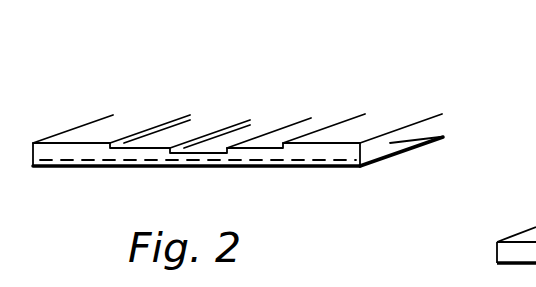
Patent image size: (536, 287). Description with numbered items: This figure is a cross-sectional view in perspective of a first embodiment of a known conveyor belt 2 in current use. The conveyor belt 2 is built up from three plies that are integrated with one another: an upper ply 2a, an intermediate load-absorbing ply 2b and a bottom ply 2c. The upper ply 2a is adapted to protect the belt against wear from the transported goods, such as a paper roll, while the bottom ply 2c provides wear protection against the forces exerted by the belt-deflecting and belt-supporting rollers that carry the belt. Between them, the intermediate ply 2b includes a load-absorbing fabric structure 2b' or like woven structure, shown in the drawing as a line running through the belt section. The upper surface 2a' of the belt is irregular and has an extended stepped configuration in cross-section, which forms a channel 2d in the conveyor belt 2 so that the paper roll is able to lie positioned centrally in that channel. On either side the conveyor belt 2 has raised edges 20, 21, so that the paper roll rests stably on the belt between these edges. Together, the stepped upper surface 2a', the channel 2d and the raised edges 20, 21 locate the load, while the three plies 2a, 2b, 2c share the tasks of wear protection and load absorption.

The conveyor belt 2 is at (338, 111).
The raised edge 20 is at (135, 122).
The raised edge 21 is at (365, 130).
The upper ply 2a is at (423, 102).
The upper surface 2a' is at (269, 98).
The intermediate load-absorbing ply 2b is at (432, 147).
The load-absorbing fabric structure 2b' is at (196, 201).
The bottom ply 2c is at (311, 167).
The channel 2d is at (290, 120).